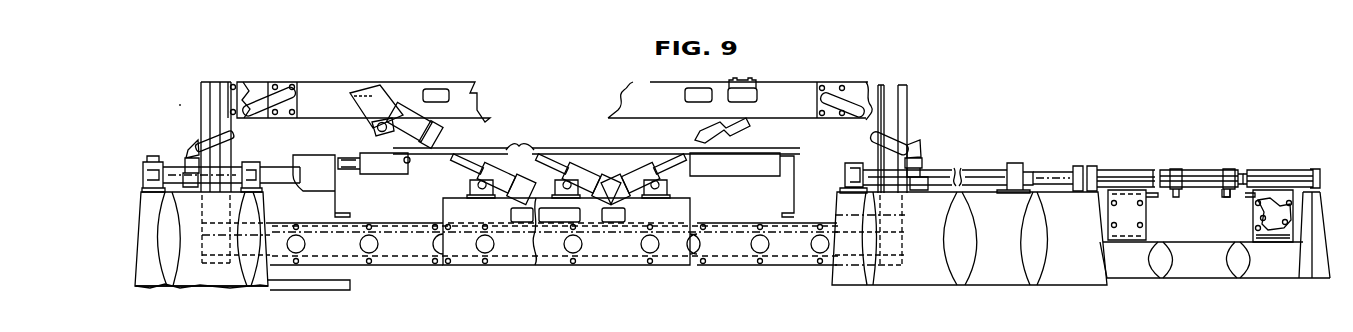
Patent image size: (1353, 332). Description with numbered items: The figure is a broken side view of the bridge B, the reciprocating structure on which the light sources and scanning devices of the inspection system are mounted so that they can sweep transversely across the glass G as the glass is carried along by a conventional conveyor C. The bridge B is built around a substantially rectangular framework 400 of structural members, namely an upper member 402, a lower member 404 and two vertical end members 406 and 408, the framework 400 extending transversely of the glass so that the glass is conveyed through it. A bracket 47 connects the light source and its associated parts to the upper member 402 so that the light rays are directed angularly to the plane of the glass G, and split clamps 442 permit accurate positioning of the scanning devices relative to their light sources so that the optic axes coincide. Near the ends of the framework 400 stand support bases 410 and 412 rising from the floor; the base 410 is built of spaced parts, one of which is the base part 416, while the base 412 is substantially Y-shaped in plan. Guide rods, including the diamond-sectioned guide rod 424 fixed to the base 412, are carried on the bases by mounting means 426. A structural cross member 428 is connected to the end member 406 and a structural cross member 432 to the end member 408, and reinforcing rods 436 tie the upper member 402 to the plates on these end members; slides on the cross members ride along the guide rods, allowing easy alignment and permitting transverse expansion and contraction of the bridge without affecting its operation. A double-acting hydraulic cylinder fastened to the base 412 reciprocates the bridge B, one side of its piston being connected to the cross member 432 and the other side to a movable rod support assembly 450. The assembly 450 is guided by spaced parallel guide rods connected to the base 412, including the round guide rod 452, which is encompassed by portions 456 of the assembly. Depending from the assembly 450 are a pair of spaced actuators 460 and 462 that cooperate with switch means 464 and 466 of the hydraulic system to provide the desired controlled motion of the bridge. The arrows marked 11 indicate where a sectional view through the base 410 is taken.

The section line 11- 11 is at (180, 104).
The bracket 47 is at (386, 112).
The framework 400 is at (435, 264).
The upper member 402 is at (323, 83).
The lower member 404 is at (533, 270).
The vertical end member 406 is at (218, 86).
The vertical end member 408 is at (892, 96).
The support base 410 is at (266, 209).
The support base 412 is at (837, 276).
The base part 416 is at (230, 273).
The guide rod 424 is at (973, 170).
The mounting means 426 is at (150, 160).
The structural cross member 428 is at (194, 148).
The structural cross member 432 is at (915, 145).
The reinforcing rods 436 is at (252, 119).
The split clamps 442 is at (470, 171).
The movable rod support assembly 450 is at (1234, 166).
The guide rod 452 is at (1276, 170).
The portions 456 is at (1224, 170).
The actuator 460 is at (1174, 190).
The actuator 462 is at (1225, 194).
The switch means 464 is at (1148, 196).
The switch means 466 is at (1253, 197).
The bridge B is at (558, 108).
The conveyor C is at (357, 155).
The glass G is at (520, 133).